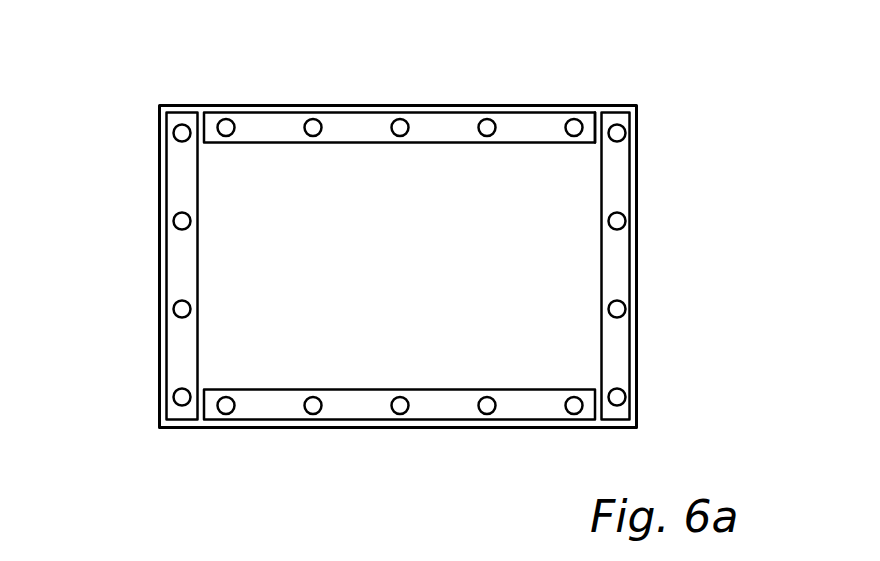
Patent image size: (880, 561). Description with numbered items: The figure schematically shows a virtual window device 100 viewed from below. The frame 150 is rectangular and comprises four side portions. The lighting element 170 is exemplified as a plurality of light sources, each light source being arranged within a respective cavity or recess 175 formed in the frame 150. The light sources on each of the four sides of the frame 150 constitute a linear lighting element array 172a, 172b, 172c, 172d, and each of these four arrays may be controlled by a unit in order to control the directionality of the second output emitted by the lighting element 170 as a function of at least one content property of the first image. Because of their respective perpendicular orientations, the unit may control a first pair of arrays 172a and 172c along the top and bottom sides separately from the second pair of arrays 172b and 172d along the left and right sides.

The virtual window device 100 is at (397, 261).
The frame 150 is at (632, 181).
The lighting element 170 is at (632, 82).
The cavity or recess 175 is at (603, 113).
The linear lighting element array 172a is at (636, 97).
The linear lighting element array 172b is at (679, 221).
The linear lighting element array 172c is at (583, 440).
The linear lighting element array 172d is at (133, 125).